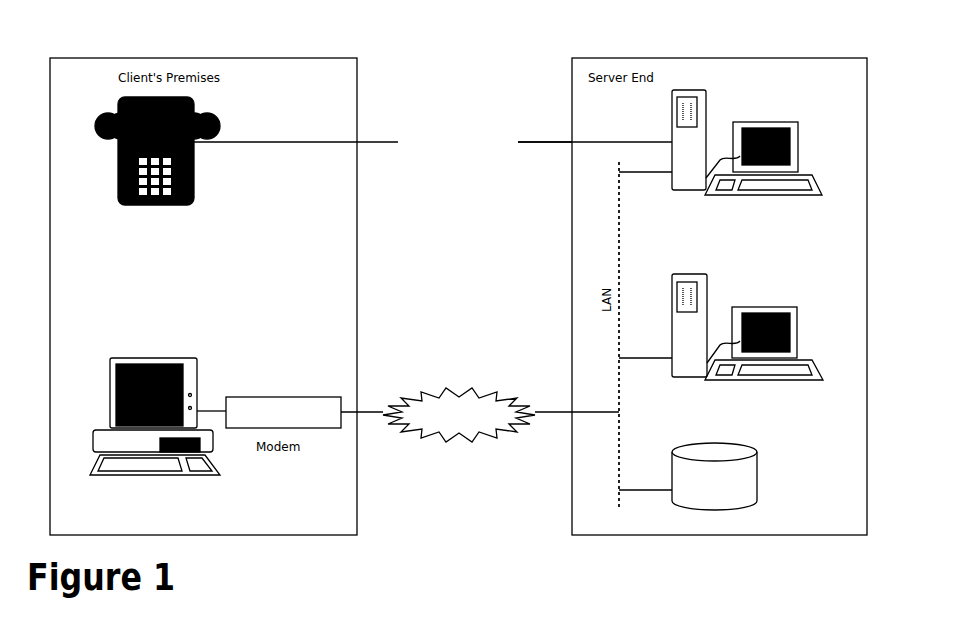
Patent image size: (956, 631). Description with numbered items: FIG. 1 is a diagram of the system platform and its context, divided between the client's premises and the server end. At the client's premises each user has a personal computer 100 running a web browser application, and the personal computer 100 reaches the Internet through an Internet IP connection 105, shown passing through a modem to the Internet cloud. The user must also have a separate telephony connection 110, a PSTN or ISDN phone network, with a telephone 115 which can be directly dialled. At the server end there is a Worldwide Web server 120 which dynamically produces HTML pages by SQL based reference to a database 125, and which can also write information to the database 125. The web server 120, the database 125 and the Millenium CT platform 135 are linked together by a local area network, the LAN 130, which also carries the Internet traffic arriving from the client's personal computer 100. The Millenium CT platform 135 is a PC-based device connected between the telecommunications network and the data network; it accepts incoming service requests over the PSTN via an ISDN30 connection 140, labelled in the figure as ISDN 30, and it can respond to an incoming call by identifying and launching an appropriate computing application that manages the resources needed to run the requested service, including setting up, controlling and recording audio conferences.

The personal computer 100 is at (110, 405).
The Internet IP connection 105 is at (372, 412).
The telephony connection 110 is at (372, 142).
The telephone 115 is at (118, 174).
The Worldwide Web server 120 is at (798, 335).
The database 125 is at (723, 512).
The LAN 130 is at (618, 450).
The Millenium CT platform 135 is at (800, 157).
The ISDN30 connection 140 is at (543, 142).
The ISDN 30 line 30 is at (622, 153).